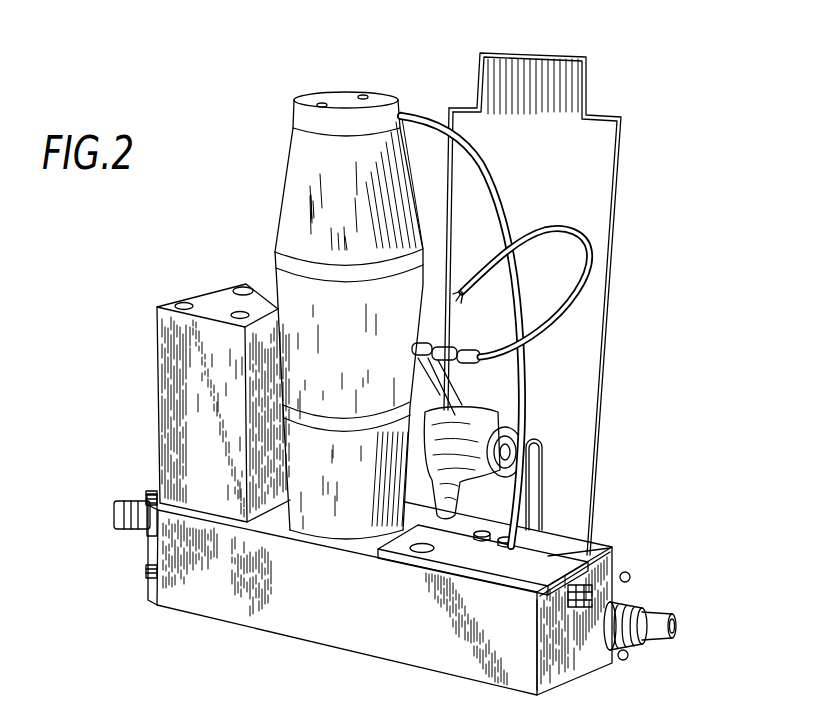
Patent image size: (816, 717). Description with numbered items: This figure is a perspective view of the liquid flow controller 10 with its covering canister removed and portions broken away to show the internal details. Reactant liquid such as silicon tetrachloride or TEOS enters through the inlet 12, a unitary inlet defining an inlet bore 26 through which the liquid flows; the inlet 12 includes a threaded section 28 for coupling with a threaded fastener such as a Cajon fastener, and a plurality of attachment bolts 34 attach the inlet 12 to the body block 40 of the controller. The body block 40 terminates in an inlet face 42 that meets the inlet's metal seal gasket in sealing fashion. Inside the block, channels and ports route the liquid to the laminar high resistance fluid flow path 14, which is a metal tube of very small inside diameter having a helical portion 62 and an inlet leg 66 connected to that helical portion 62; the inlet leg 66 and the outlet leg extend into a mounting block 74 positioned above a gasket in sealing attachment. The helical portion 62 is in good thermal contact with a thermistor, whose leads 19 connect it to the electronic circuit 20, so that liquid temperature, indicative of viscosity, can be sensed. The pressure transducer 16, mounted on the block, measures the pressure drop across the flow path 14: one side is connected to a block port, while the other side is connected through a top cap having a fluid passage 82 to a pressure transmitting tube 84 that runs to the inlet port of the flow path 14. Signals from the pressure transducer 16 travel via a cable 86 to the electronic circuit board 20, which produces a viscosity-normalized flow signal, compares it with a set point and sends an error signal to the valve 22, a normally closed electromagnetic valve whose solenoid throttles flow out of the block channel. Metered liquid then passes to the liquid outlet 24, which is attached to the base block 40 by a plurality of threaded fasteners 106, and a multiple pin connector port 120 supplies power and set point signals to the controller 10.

The liquid flow controller 10 is at (640, 152).
The inlet 12 is at (632, 588).
The high resistance fluid flow path 14 is at (452, 422).
The pressure transducer 16 is at (316, 92).
The leads 19 is at (403, 374).
The electronic circuit 20 is at (464, 104).
The valve 22 is at (205, 302).
The liquid outlet 24 is at (115, 500).
The inlet bore 26 is at (675, 627).
The threaded section 28 is at (648, 607).
The attachment bolts 34 is at (627, 575).
The body block 40 is at (340, 636).
The inlet face 42 is at (545, 635).
The helical portion 62 is at (500, 417).
The inlet leg 66 is at (540, 473).
The mounting block 74 is at (588, 540).
The fluid passage 82 is at (380, 97).
The pressure transmitting tube 84 is at (493, 200).
The cable 86 is at (570, 275).
The threaded fasteners 106 is at (150, 493).
The multiple pin connector port 120 is at (532, 72).